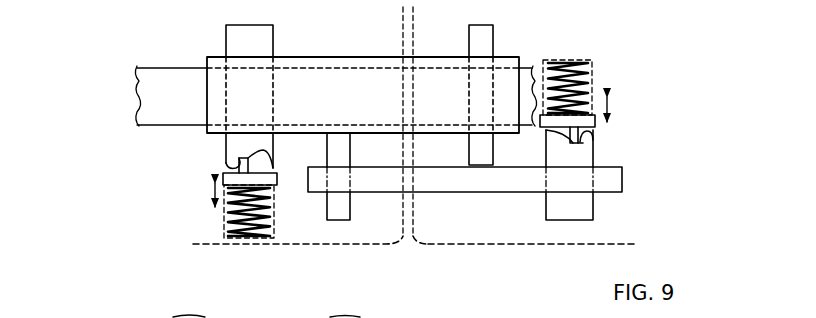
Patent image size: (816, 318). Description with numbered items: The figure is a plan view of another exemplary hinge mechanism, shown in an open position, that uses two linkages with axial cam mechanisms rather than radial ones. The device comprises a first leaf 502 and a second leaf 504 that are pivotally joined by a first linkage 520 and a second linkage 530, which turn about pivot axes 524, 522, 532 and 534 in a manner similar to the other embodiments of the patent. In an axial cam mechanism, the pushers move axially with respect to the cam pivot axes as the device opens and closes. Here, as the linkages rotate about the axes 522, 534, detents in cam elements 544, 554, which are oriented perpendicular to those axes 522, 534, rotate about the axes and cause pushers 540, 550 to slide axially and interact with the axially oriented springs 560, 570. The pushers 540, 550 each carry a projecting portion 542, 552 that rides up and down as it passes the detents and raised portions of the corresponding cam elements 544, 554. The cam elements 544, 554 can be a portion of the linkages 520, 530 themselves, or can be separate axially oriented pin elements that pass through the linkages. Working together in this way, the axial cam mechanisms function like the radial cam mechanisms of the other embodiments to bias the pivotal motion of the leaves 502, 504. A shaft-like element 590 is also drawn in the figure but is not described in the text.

The first leaf 502 is at (676, 240).
The second leaf 504 is at (150, 203).
The first linkage 520 is at (512, 183).
The pivot axis 522 is at (583, 207).
The pivot axis 524 is at (338, 215).
The second linkage 530 is at (368, 88).
The pivot axis 532 is at (487, 40).
The pivot axis 534 is at (230, 40).
The pusher 540 is at (592, 122).
The projecting portion 542 is at (585, 136).
The cam element 544 is at (583, 156).
The pusher 550 is at (223, 174).
The projecting portion 552 is at (243, 157).
The cam element 554 is at (263, 150).
The axially oriented spring 560 is at (592, 80).
The axially oriented spring 570 is at (227, 214).
The shaft 590 is at (177, 75).